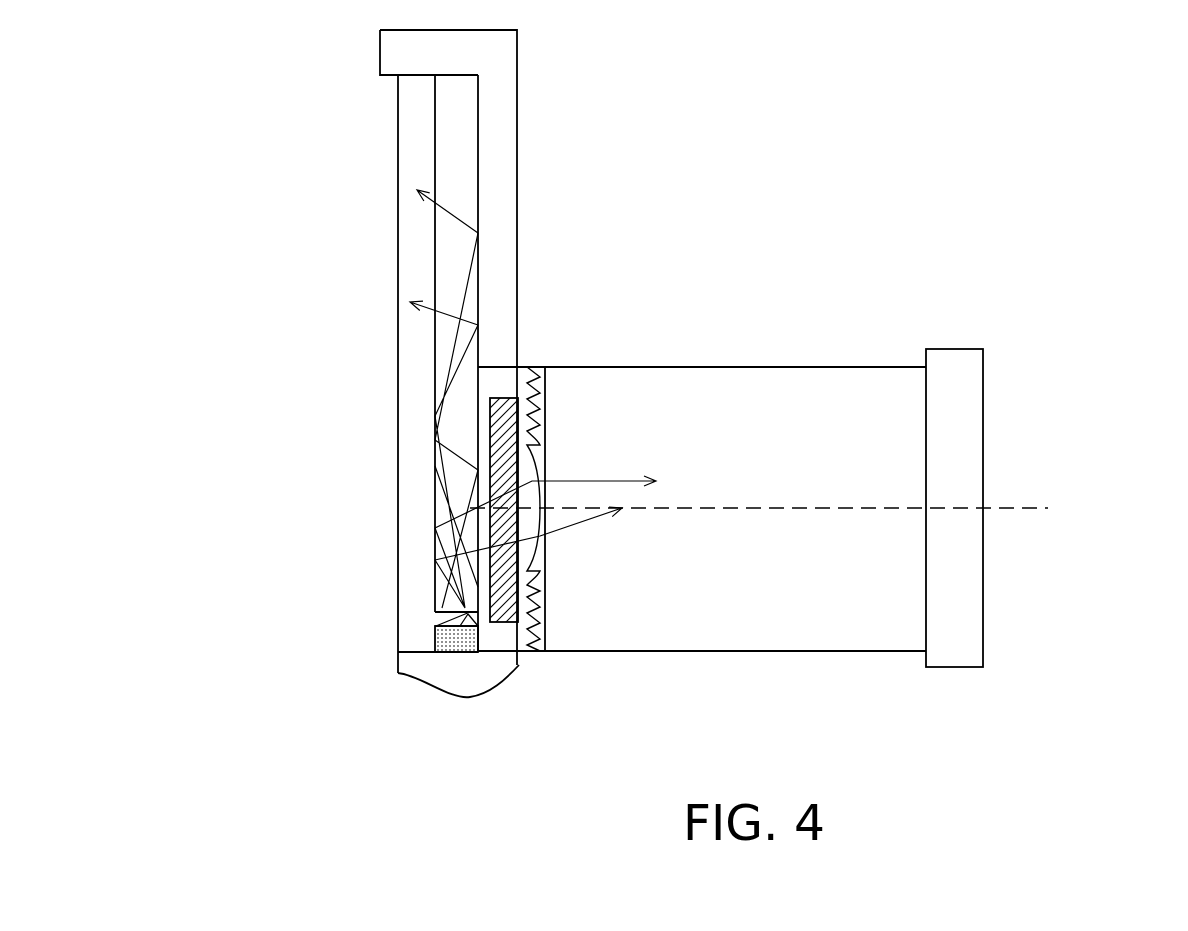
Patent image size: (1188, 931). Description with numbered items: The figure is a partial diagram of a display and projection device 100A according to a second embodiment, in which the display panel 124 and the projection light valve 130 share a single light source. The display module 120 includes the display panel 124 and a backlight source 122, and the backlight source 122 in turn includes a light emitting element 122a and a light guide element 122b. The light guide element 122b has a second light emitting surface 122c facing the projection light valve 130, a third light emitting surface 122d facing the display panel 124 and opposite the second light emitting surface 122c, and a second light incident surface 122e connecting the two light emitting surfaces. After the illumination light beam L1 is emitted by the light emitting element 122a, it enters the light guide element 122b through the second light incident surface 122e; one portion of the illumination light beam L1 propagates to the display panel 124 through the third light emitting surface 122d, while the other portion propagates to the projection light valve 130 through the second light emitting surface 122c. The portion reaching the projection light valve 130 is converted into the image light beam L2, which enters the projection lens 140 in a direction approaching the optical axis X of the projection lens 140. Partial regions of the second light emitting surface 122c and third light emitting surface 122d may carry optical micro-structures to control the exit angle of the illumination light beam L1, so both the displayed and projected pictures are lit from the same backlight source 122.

The display and projection device 100A is at (1164, 771).
The display module 120 is at (235, 552).
The backlight source 122 is at (292, 610).
The light emitting element 122a is at (435, 640).
The light guide element 122b is at (438, 603).
The second light emitting surface 122c is at (488, 360).
The third light emitting surface 122d is at (423, 358).
The second light incident surface 122e is at (479, 630).
The display panel 124 is at (410, 587).
The projection light valve 130 is at (493, 622).
The projection lens 140 is at (826, 347).
The illumination light beam L1 is at (487, 550).
The image light beam L2 is at (577, 528).
The optical axis X is at (1041, 512).